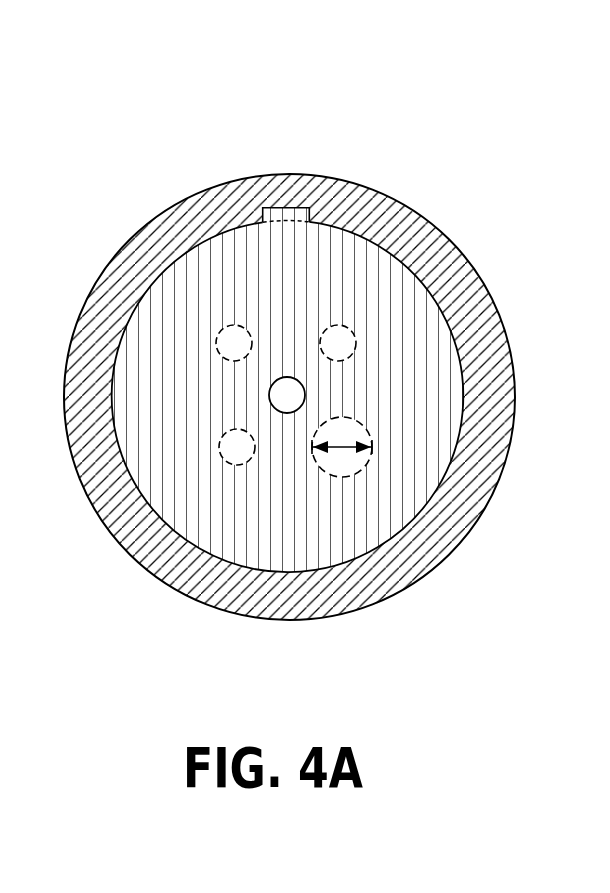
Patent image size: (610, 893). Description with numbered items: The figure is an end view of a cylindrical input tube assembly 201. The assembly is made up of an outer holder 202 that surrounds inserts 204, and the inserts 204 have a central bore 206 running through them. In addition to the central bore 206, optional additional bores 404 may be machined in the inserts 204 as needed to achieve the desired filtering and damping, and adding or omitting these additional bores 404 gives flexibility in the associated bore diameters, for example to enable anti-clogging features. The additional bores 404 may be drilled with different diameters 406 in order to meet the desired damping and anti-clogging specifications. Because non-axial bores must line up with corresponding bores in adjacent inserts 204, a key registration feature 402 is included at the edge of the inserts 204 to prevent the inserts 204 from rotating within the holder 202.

The cylindrical input tube assembly 201 is at (329, 359).
The holder 202 is at (272, 592).
The inserts 204 is at (328, 525).
The central bore 206 is at (281, 390).
The key registration feature 402 is at (283, 215).
The additional bores 404 is at (353, 338).
The different diameters 406 is at (345, 443).